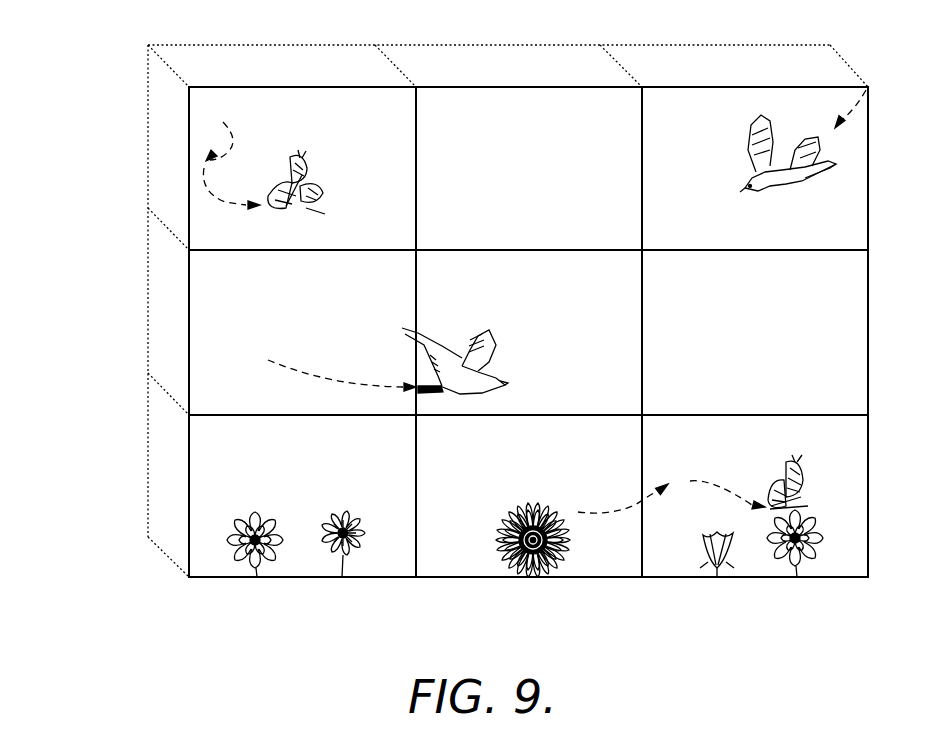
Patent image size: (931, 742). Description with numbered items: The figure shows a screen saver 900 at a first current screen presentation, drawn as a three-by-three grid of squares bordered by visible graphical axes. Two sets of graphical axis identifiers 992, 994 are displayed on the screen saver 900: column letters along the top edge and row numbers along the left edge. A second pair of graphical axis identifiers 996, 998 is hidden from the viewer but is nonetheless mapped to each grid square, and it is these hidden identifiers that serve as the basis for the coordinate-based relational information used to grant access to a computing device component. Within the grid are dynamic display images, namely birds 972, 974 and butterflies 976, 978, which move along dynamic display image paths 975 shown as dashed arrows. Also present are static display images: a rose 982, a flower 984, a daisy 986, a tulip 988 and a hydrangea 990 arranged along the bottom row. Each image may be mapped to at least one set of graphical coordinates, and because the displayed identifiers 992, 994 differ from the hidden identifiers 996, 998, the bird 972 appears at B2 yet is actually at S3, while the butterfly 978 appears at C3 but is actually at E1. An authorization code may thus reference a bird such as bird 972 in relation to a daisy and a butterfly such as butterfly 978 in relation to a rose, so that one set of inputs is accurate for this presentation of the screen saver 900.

The screen saver 900 is at (76, 75).
The bird (dynamic display image) 972 is at (489, 336).
The bird (dynamic display image) 974 is at (800, 183).
The dynamic display image path 975 is at (228, 201).
The butterfly (dynamic display image) 976 is at (304, 178).
The butterfly (dynamic display image) 978 is at (788, 461).
The rose (static display image) 982 is at (258, 521).
The flower (static display image) 984 is at (341, 511).
The daisy (static display image) 986 is at (498, 534).
The tulip (static display image) 988 is at (700, 540).
The hydrangea (static display image) 990 is at (815, 521).
The graphical axis identifier 992 is at (192, 101).
The graphical axis identifier 994 is at (192, 131).
The graphical axis identifier 996 is at (279, 57).
The graphical axis identifier 998 is at (163, 162).